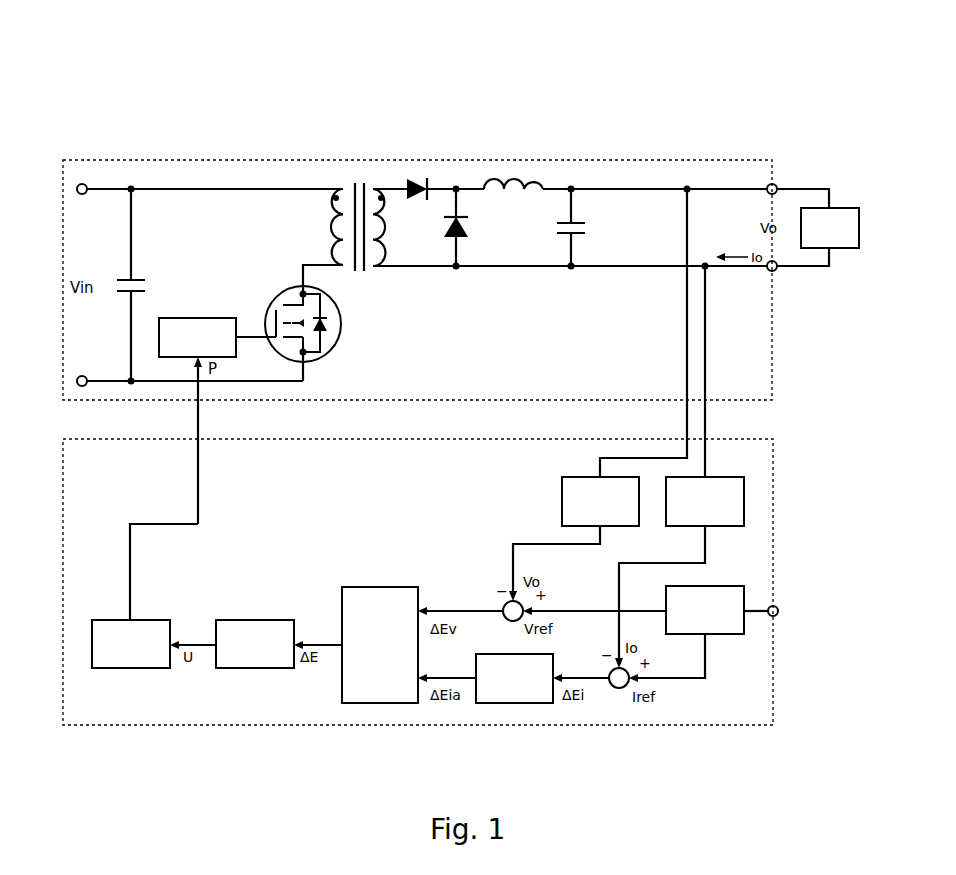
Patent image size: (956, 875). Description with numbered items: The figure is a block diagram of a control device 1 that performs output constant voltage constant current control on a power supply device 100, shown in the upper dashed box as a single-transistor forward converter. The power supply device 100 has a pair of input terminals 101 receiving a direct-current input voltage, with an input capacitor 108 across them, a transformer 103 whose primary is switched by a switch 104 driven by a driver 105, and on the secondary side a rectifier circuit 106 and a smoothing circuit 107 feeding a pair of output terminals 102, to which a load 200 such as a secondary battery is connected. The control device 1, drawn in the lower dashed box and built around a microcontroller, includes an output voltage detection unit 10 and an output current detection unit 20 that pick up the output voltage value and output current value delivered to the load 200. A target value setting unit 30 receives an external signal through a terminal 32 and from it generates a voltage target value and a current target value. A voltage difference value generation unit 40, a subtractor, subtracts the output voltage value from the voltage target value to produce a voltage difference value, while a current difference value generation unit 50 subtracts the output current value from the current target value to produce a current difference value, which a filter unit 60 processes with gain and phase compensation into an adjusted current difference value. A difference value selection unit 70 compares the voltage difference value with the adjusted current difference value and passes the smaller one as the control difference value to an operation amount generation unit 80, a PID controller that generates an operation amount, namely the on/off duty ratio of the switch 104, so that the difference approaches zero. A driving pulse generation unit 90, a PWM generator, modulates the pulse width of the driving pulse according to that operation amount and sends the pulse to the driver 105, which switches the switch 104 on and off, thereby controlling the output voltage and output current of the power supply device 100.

The control device 1 is at (775, 458).
The output voltage detection unit 10 is at (585, 477).
The output current detection unit 20 is at (728, 477).
The target value setting unit 30 is at (724, 586).
The terminal 32 is at (780, 607).
The voltage difference value generation unit 40 is at (510, 620).
The current difference value generation unit 50 is at (617, 688).
The filter unit 60 is at (553, 658).
The difference value selection unit 70 is at (382, 587).
The operation amount generation unit 80 is at (260, 620).
The driving pulse generation unit 90 is at (115, 620).
The power supply device 100 is at (722, 160).
The input terminals 101 is at (78, 203).
The output terminals 102 is at (768, 203).
The transformer 103 is at (366, 176).
The switch 104 is at (342, 330).
The driver 105 is at (196, 318).
The rectifier circuit 106 is at (443, 174).
The smoothing circuit 107 is at (553, 173).
The input capacitor 108 is at (142, 280).
The load 200 is at (833, 207).